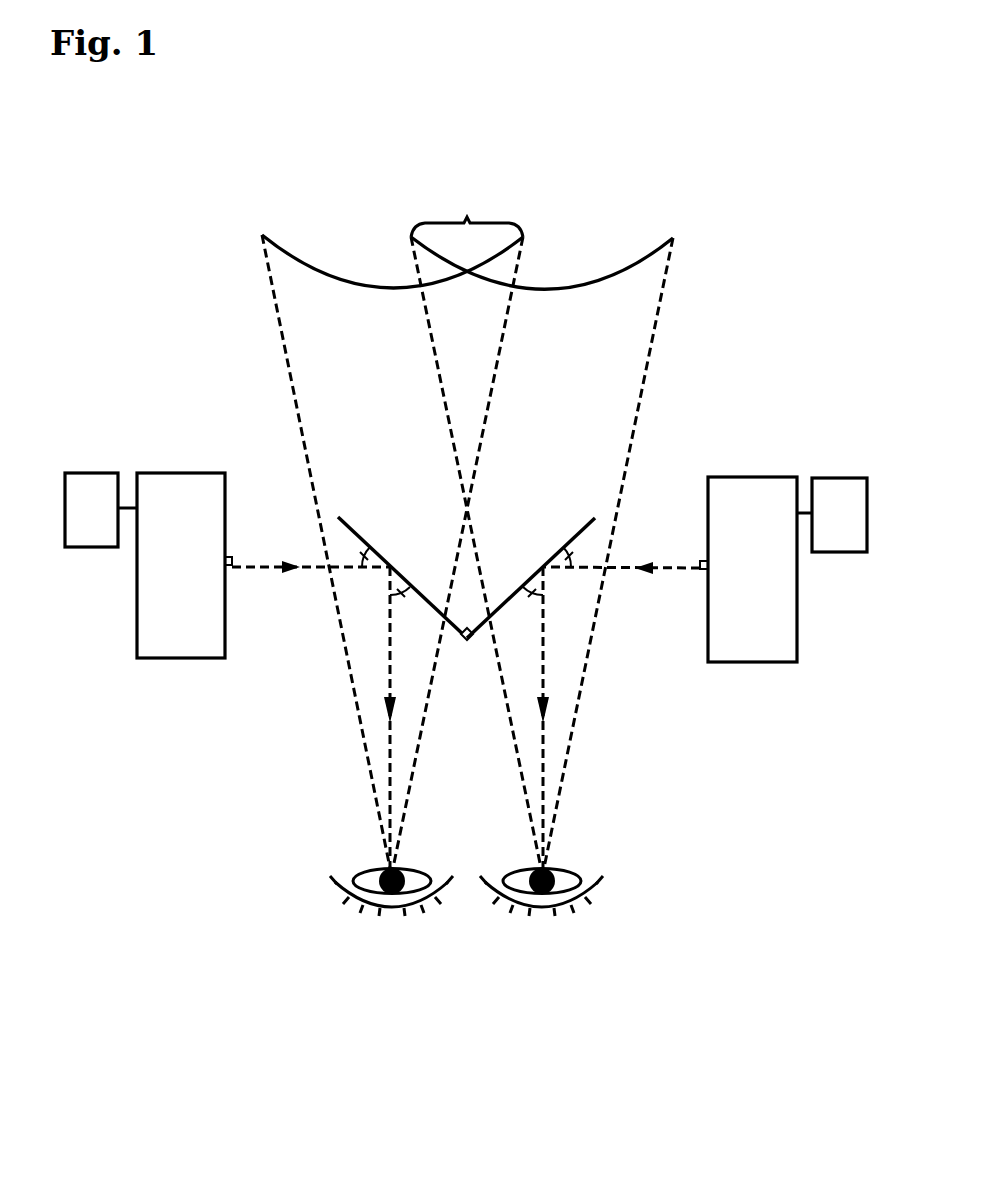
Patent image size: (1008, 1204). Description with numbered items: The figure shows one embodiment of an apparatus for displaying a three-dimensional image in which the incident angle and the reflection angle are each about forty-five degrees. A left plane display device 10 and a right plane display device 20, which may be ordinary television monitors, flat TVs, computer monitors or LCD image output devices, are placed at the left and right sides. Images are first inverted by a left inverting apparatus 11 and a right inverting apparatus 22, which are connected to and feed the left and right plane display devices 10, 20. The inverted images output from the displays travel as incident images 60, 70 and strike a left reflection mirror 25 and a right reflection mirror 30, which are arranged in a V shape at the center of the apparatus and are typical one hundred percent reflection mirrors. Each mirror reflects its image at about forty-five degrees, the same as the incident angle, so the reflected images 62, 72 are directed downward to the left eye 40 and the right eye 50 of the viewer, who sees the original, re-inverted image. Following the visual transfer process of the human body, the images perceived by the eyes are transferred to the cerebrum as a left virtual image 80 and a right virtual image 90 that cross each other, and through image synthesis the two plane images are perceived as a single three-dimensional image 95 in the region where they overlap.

The left plane display device 10 is at (190, 480).
The left inverting apparatus 11 is at (80, 480).
The right plane display device 20 is at (738, 483).
The right inverting apparatus 22 is at (848, 486).
The left reflection mirror 25 is at (355, 525).
The right reflection mirror 30 is at (577, 527).
The left eye 40 is at (380, 910).
The right eye 50 is at (548, 910).
The incident image from left plane display device 60 is at (358, 567).
The reflected image to left eye 62 is at (390, 748).
The incident image from right plane display device 70 is at (592, 568).
The reflected image to right eye 72 is at (543, 748).
The left virtual image 80 is at (305, 250).
The right virtual image 90 is at (627, 252).
The 3-dimensional image 95 is at (467, 203).